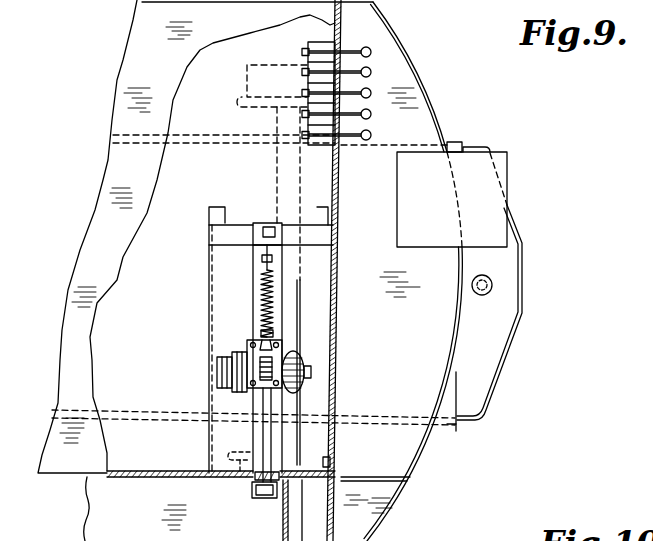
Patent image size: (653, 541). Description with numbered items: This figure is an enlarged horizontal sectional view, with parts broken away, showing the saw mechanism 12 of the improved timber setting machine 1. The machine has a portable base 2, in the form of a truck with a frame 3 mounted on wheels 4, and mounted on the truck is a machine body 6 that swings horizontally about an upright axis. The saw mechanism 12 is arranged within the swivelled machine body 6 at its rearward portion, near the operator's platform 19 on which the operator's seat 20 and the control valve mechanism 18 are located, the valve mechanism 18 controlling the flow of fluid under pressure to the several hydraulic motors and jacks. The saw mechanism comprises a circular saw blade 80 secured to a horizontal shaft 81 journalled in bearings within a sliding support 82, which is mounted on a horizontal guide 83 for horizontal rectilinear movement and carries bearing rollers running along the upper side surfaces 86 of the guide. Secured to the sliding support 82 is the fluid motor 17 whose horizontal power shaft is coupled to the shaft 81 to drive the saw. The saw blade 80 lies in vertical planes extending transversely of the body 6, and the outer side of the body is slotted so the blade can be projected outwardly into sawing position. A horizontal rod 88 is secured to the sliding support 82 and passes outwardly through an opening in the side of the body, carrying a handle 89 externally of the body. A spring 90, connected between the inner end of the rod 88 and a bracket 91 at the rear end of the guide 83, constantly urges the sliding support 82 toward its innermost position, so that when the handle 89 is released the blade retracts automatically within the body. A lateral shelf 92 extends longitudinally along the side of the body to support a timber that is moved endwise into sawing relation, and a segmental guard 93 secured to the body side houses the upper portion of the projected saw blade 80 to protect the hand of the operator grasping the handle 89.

The timber setting machine 1 is at (130, 40).
The portable base 2 is at (488, 407).
The frame 3 is at (449, 426).
The wheels 4 is at (247, 80).
The machine body 6 is at (122, 108).
The saw mechanism 12 is at (305, 362).
The fluid motor 17 is at (218, 369).
The control valve mechanism 18 is at (307, 43).
The operator's platform 19 is at (420, 118).
The seat 20 is at (465, 160).
The circular saw blade 80 is at (297, 442).
The horizontal shaft 81 is at (311, 375).
The sliding support 82 is at (248, 388).
The horizontal guide 83 is at (253, 418).
The upper side surfaces 86 is at (271, 408).
The horizontal rod 88 is at (225, 477).
The handle 89 is at (254, 496).
The spring 90 is at (262, 292).
The bracket 91 is at (258, 227).
The lateral shelf 92 is at (92, 514).
The segmental guard 93 is at (302, 532).